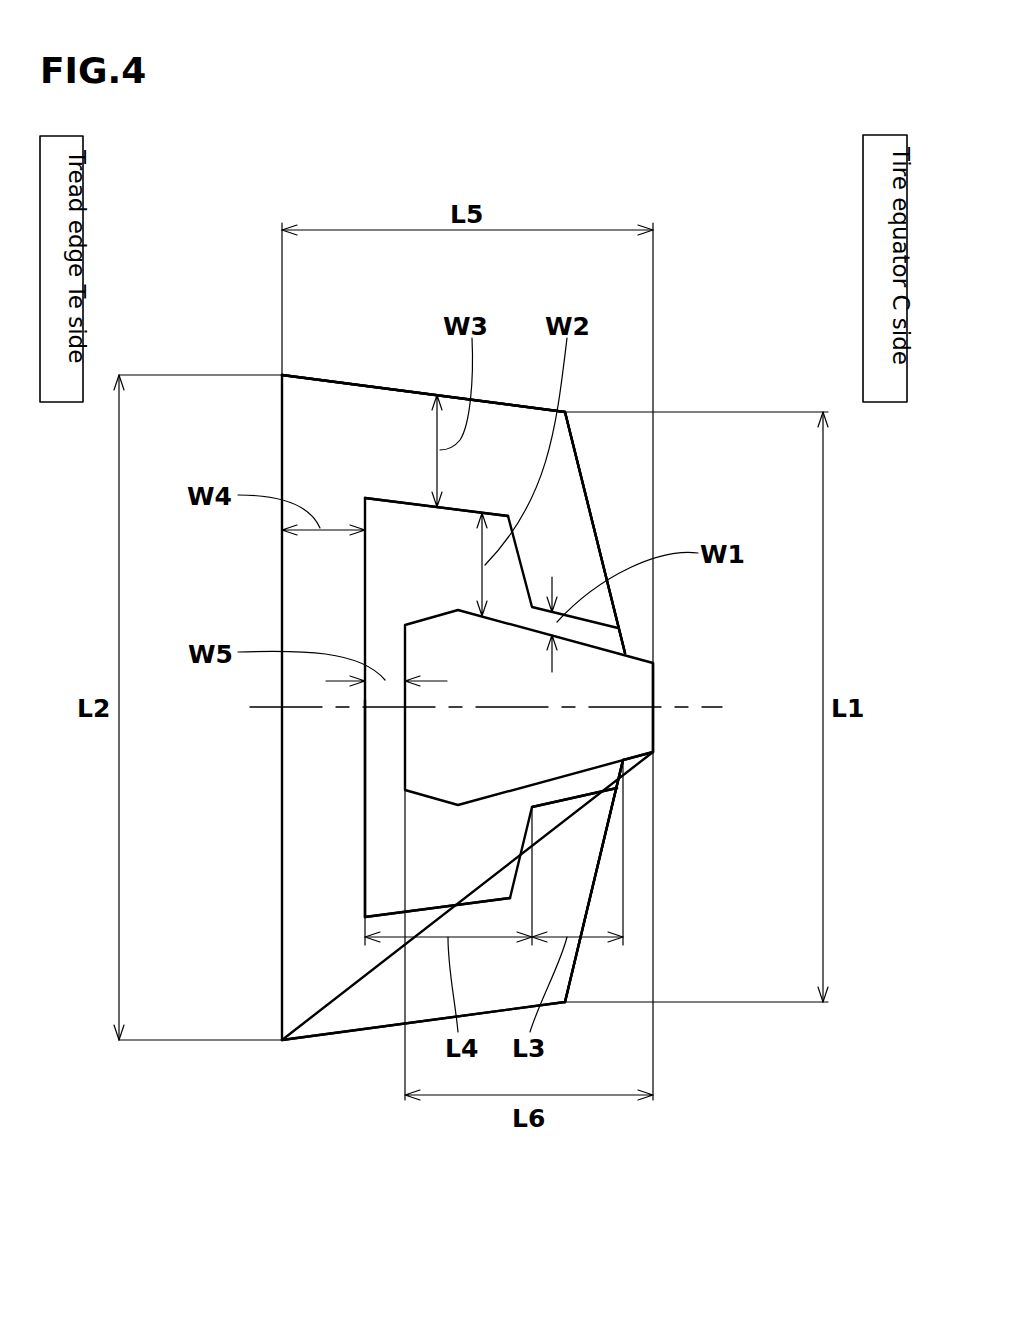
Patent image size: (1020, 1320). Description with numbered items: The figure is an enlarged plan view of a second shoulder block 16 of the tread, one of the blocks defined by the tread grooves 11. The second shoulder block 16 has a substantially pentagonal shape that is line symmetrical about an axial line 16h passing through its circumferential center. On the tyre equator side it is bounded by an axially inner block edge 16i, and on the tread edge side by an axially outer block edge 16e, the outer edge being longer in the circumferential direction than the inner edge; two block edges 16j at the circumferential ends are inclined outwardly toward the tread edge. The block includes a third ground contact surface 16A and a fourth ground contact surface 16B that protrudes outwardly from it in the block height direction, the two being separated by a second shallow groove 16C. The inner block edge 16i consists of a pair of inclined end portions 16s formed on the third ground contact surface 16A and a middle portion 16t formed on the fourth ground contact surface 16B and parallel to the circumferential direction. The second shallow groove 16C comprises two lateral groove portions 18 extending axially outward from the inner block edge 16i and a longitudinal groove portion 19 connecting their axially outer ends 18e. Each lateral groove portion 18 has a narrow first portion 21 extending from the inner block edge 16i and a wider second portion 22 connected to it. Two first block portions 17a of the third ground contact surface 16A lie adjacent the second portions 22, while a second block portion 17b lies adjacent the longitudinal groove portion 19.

The tread grooves 11 is at (790, 980).
The second shoulder block 16 is at (336, 1076).
The third ground contact surface 16A is at (579, 897).
The fourth ground contact surface 16B is at (602, 728).
The second shallow groove 16C is at (398, 538).
The axially outer block edge 16e is at (280, 820).
The axial line 16h is at (688, 705).
The axially inner block edge 16i is at (590, 507).
The block edges 16j is at (340, 382).
The end portions 16s is at (578, 460).
The middle portion 16t is at (655, 682).
The first block portions 17a is at (487, 447).
The second block portion 17b is at (323, 745).
The lateral groove portions 18 is at (450, 563).
The axially outer ends 18e is at (373, 510).
The longitudinal groove portion 19 is at (383, 872).
The first portion 21 is at (575, 782).
The second portion 22 is at (445, 857).